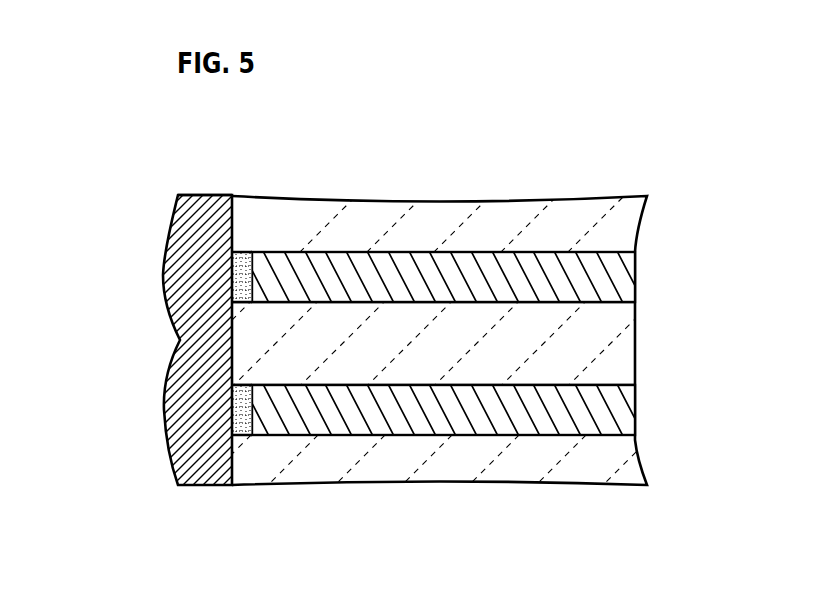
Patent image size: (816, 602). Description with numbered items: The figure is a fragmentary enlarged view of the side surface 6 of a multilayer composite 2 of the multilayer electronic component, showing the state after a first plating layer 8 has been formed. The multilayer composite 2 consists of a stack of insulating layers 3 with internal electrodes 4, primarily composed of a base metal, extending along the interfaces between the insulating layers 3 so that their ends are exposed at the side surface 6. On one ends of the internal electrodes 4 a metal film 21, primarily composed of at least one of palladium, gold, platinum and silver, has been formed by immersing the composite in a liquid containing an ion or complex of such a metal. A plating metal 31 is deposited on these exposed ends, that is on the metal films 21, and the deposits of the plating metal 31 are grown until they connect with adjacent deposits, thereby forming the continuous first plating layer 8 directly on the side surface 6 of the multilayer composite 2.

The multilayer composite 2 is at (572, 190).
The insulating layers 3 is at (530, 370).
The internal electrodes 4 is at (630, 283).
The side surface 6 is at (228, 219).
The first plating layer 8 is at (168, 458).
The metal film 21 is at (243, 252).
The plating metal 31 is at (216, 278).